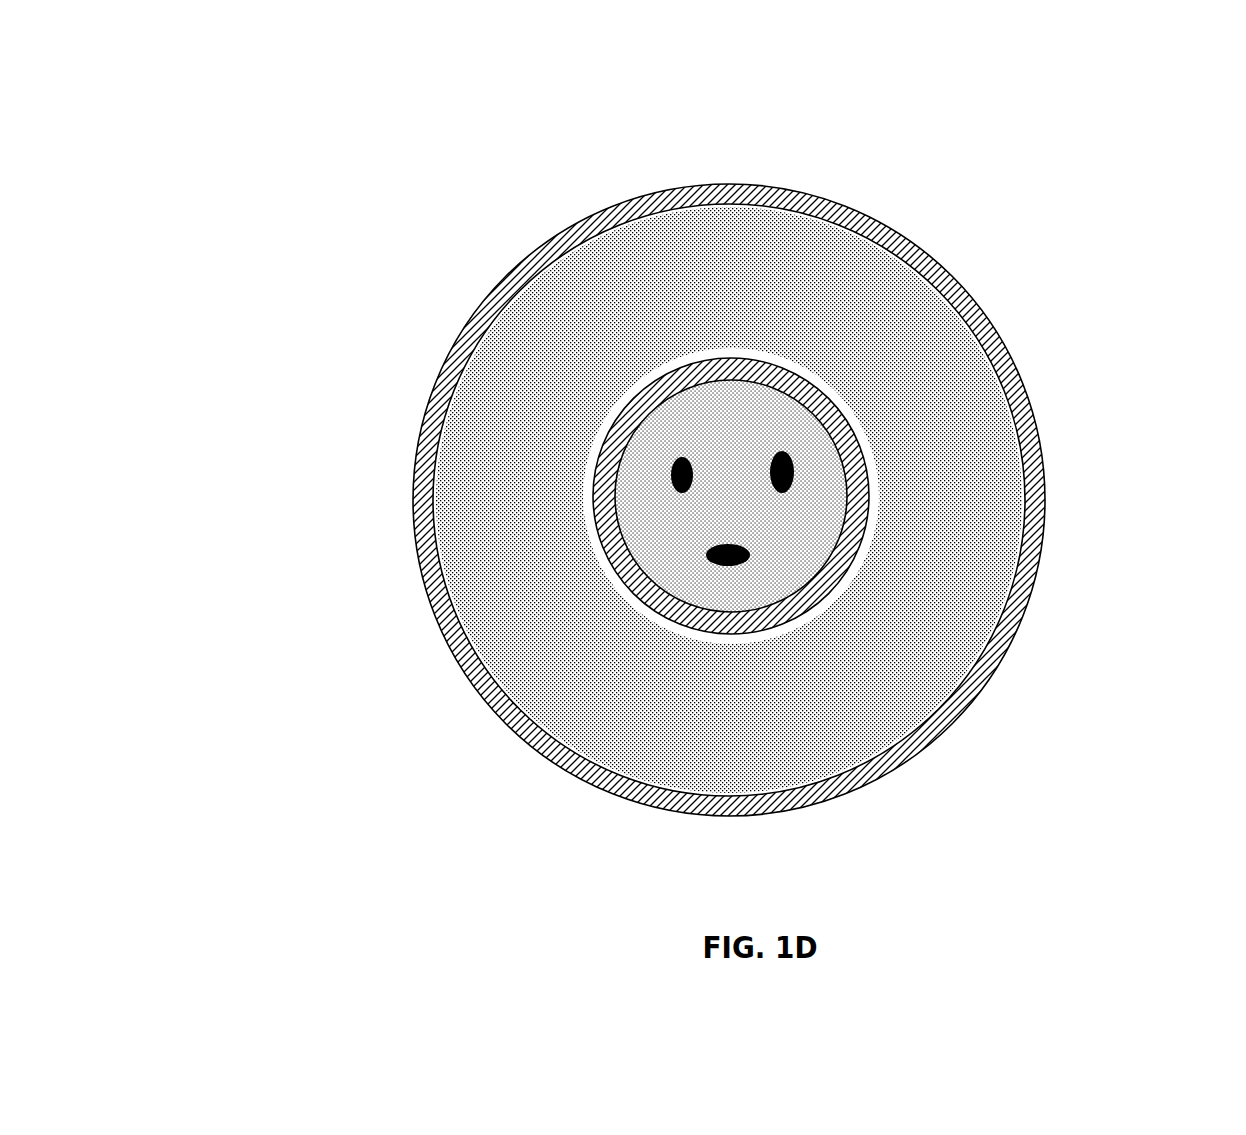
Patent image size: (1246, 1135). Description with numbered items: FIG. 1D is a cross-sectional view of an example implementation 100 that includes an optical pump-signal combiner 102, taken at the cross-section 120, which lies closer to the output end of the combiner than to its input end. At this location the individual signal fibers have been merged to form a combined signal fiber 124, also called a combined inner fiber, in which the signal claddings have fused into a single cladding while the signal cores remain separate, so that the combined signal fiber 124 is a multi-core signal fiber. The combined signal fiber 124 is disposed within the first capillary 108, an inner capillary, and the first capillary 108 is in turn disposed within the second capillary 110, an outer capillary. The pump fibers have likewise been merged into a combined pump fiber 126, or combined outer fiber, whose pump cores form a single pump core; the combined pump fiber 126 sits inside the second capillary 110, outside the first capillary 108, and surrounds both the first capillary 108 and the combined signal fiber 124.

The example implementation 100 is at (268, 66).
The optical pump-signal combiner 102 is at (1013, 338).
The first capillary 108 is at (657, 387).
The second capillary 110 is at (528, 267).
The cross-section 120 is at (792, 444).
The combined signal fiber 124 is at (805, 522).
The combined pump fiber 126 is at (777, 282).